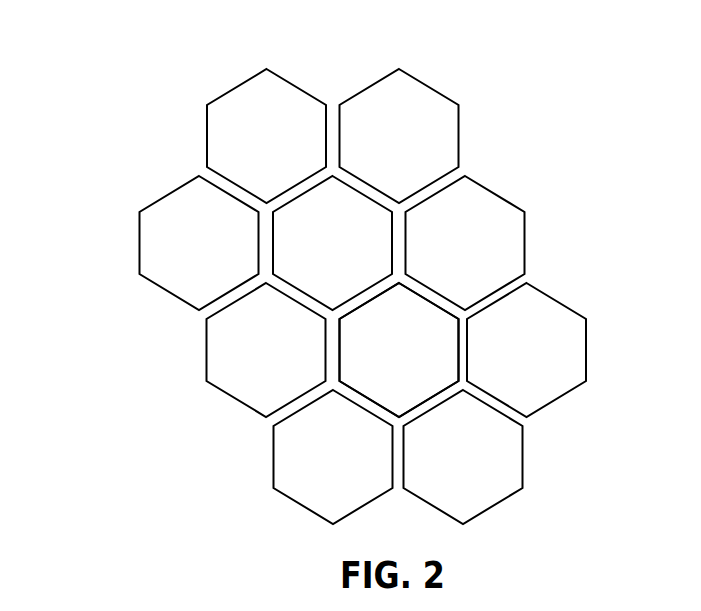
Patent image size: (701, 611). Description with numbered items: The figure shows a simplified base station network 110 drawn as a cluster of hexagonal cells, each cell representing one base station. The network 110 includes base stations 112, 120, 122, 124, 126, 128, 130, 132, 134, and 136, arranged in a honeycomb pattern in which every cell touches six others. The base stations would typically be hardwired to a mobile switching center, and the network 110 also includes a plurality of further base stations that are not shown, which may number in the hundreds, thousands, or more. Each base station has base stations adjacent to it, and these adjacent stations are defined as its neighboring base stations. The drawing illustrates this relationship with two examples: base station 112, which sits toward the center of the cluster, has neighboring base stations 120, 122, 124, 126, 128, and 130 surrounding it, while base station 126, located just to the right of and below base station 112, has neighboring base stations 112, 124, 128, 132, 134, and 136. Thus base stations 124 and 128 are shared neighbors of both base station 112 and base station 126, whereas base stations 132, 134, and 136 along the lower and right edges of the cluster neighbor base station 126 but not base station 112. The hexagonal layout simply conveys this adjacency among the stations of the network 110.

The base station network 110 is at (132, 61).
The base station 112 is at (357, 295).
The base station 120 is at (247, 78).
The base station 122 is at (428, 87).
The base station 124 is at (500, 197).
The base station 126 is at (457, 347).
The base station 128 is at (206, 343).
The base station 130 is at (177, 188).
The base station 132 is at (272, 450).
The base station 134 is at (523, 467).
The base station 136 is at (560, 302).